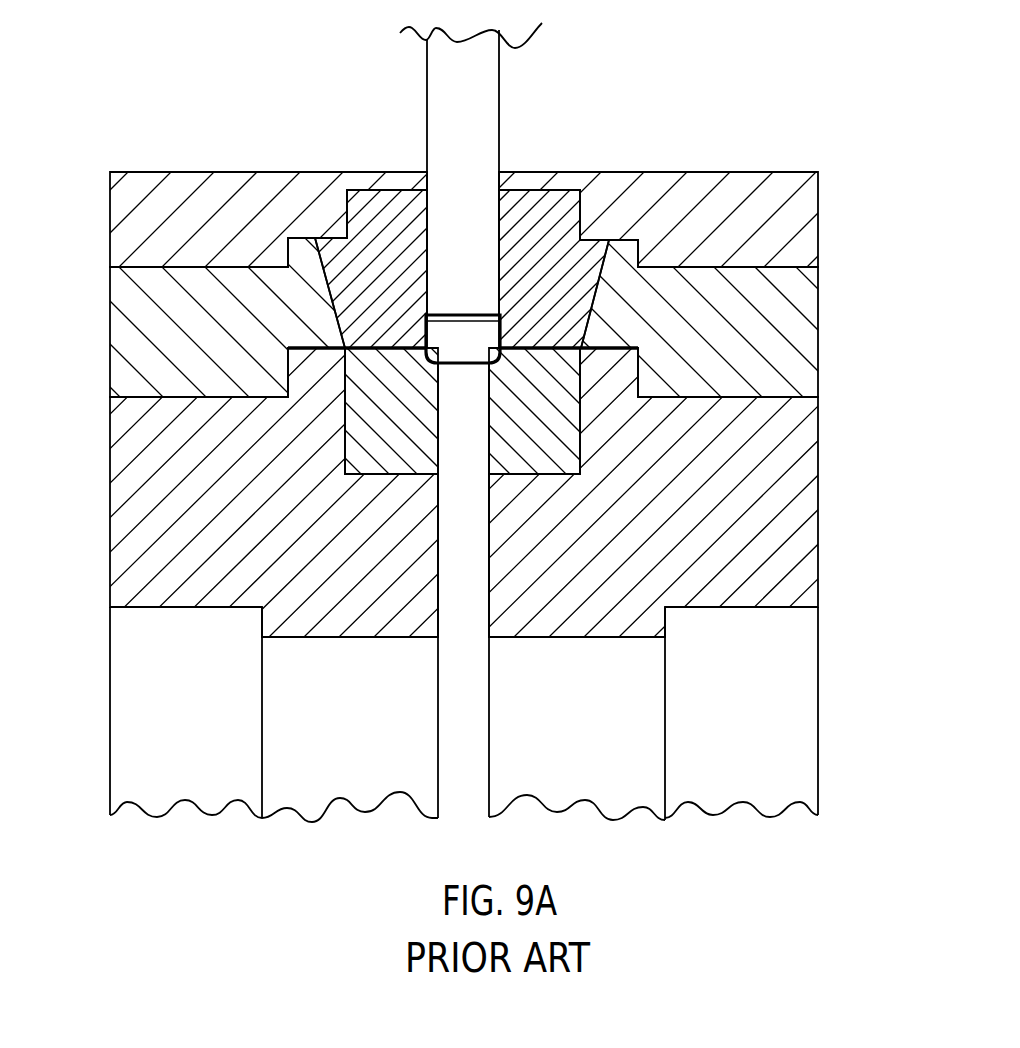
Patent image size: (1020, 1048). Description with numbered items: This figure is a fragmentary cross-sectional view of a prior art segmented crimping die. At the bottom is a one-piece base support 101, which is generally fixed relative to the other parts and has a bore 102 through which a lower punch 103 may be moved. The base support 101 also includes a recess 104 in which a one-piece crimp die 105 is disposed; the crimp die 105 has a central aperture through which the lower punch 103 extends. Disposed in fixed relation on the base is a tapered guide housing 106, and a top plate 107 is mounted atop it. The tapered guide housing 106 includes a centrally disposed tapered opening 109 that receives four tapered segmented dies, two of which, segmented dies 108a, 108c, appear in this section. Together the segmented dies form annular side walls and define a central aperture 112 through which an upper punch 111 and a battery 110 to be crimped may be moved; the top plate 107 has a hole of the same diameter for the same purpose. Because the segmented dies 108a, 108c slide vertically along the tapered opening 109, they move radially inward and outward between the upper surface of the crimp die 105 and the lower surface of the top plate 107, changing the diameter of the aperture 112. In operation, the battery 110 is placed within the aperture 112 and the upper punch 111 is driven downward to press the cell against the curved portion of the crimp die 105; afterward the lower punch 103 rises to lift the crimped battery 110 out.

The base support 101 is at (135, 538).
The bore 102 is at (438, 597).
The lower punch 103 is at (467, 708).
The recess 104 is at (363, 412).
The crimp die 105 is at (562, 452).
The tapered guide housing 106 is at (128, 327).
The top plate 107 is at (742, 193).
The segmented die 108a is at (330, 245).
The segmented die 108c is at (540, 205).
The tapered opening 109 is at (363, 210).
The battery 110 is at (450, 337).
The upper punch 111 is at (482, 82).
The aperture 112 is at (427, 185).